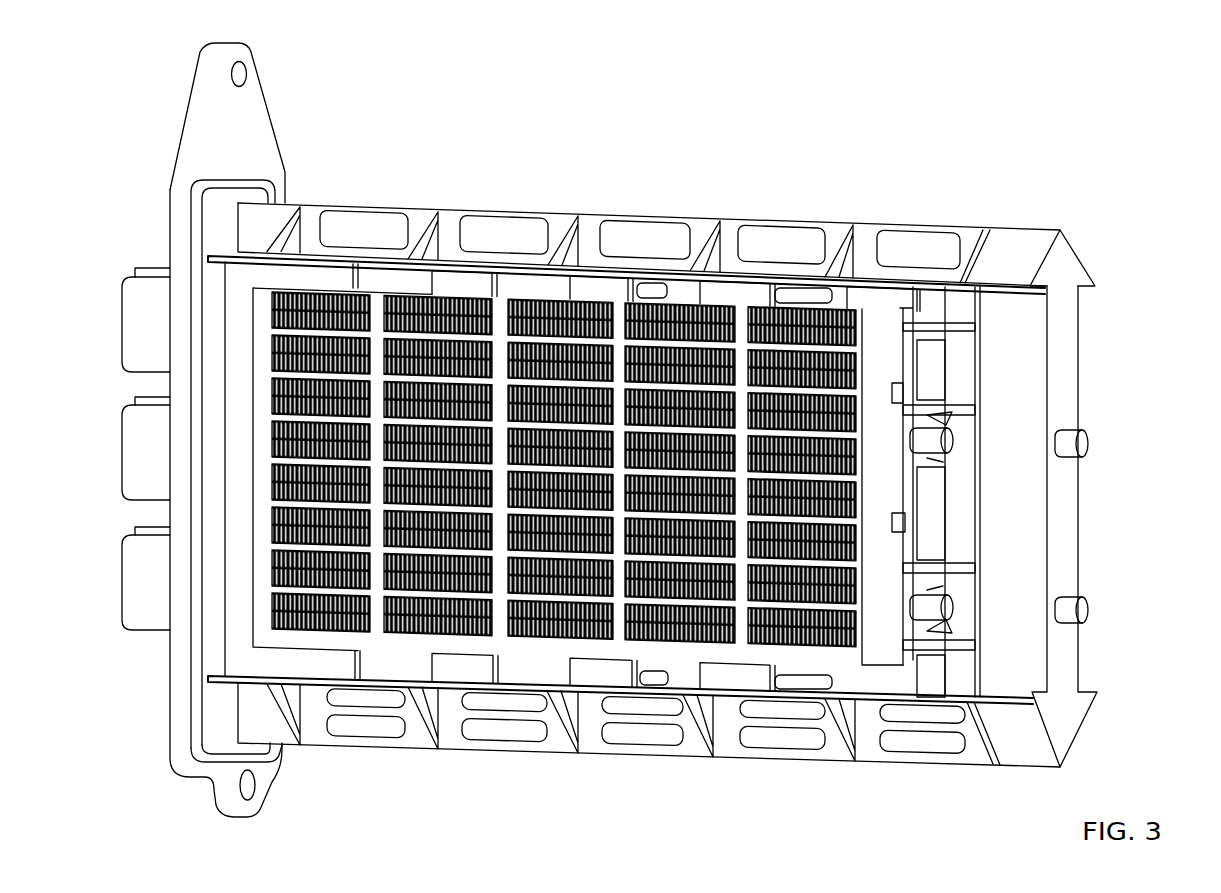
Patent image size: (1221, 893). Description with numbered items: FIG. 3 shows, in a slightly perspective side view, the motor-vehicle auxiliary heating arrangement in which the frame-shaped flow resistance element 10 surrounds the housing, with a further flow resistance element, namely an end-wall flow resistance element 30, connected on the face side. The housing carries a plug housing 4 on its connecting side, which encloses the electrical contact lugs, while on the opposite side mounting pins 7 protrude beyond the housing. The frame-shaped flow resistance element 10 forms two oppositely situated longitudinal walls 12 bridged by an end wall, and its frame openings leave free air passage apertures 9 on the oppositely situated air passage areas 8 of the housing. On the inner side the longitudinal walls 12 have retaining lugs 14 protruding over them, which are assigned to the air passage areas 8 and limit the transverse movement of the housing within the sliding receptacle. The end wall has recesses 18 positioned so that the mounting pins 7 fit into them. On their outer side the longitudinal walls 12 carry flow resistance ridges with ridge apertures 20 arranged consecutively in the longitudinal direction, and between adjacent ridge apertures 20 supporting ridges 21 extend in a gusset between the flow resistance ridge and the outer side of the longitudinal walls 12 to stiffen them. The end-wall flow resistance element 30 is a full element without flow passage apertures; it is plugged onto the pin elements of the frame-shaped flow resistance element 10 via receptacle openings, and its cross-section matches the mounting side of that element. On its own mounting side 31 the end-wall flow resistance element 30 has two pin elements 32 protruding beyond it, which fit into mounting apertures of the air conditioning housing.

The plug housing 4 is at (140, 246).
The mounting pins 7 is at (957, 448).
The air passage areas 8 is at (525, 278).
The air passage apertures 9 is at (507, 342).
The frame-shaped flow resistance element 10 is at (890, 203).
The longitudinal walls 12 is at (367, 262).
The retaining lugs 14 is at (607, 287).
The recesses 18 is at (950, 422).
The ridge apertures 20 is at (655, 235).
The supporting ridges 21 is at (710, 247).
The end-wall flow resistance element 30 is at (1050, 218).
The mounting side 31 is at (1097, 313).
The pin elements 32 is at (1091, 443).